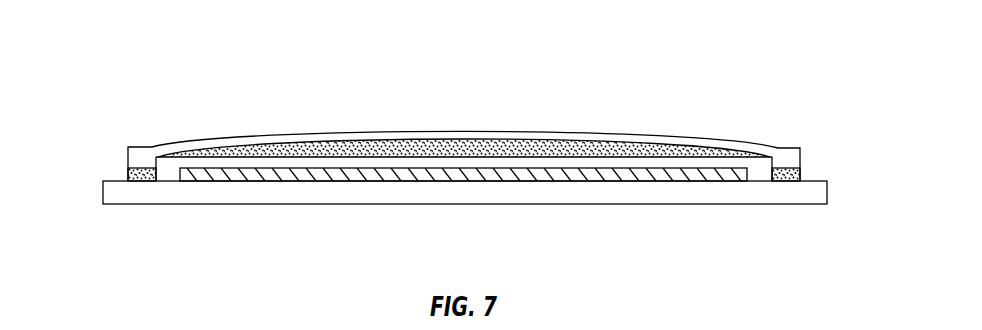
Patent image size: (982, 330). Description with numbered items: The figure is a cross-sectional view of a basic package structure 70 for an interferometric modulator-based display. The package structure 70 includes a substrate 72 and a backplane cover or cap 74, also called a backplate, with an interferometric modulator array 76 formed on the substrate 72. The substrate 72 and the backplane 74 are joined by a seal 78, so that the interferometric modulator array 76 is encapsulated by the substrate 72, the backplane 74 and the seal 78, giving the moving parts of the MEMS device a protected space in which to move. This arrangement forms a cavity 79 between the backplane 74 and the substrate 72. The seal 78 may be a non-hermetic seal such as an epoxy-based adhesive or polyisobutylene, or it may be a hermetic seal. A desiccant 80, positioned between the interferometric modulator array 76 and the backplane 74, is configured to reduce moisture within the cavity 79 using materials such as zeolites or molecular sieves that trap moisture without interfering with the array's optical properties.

The package structure 70 is at (153, 42).
The substrate 72 is at (257, 196).
The backplane cover 74 is at (456, 133).
The interferometric modulator array 76 is at (551, 172).
The seal 78 is at (802, 172).
The cavity 79 is at (334, 165).
The desiccant 80 is at (623, 153).